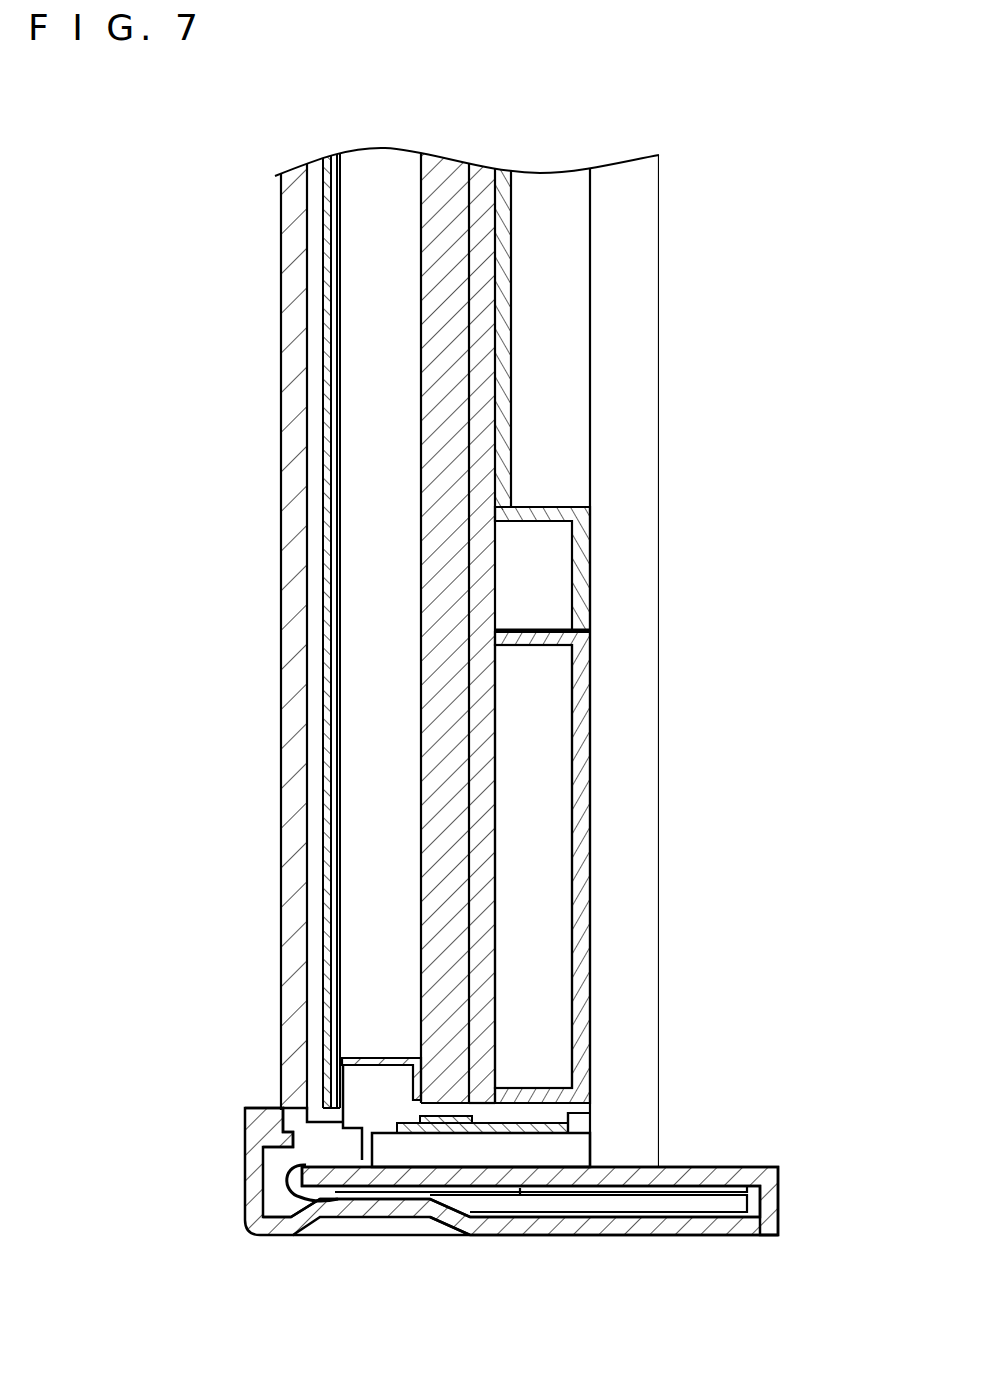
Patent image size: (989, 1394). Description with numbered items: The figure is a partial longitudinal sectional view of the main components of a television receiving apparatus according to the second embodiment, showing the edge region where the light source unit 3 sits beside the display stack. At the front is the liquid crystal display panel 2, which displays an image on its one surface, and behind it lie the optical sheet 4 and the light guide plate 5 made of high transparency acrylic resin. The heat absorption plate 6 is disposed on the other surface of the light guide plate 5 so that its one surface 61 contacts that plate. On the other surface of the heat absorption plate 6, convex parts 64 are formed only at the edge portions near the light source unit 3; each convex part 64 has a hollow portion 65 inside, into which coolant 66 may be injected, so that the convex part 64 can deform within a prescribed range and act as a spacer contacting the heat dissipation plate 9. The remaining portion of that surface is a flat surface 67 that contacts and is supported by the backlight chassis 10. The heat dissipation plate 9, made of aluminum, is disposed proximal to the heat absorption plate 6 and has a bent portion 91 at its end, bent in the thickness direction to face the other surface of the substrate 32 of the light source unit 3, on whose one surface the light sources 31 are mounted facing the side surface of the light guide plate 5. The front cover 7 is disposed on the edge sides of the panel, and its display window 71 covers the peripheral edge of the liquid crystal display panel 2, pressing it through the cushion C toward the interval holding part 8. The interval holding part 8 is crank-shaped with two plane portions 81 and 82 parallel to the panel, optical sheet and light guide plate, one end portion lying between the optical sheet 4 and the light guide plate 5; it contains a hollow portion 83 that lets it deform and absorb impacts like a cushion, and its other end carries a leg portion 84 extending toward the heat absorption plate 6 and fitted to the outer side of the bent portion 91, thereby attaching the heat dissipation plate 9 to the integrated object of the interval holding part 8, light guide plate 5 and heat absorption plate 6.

The liquid crystal display panel 2 is at (283, 866).
The light source unit 3 is at (498, 1137).
The optical sheet 4 is at (332, 778).
The light guide plate 5 is at (432, 702).
The heat absorption plate 6 is at (535, 1095).
The front cover 7 is at (265, 1235).
The interval holding part 8 is at (306, 1235).
The heat dissipation plate 9 is at (640, 880).
The backlight chassis 10 is at (507, 387).
The light source 31 is at (425, 1140).
The substrate 32 is at (470, 1140).
The one surface of heat absorption plate 61 is at (469, 186).
The convex part 64 is at (582, 700).
The hollow portion 65 is at (590, 805).
The coolant 66 is at (548, 965).
The flat surface 67 is at (478, 167).
The display window 71 is at (250, 1108).
The plane portion 81 is at (300, 1180).
The plane portion 82 is at (325, 1150).
The hollow portion 83 is at (370, 1145).
The leg portion 84 is at (742, 1178).
The bent portion 91 is at (552, 1148).
The cushion C is at (275, 1105).